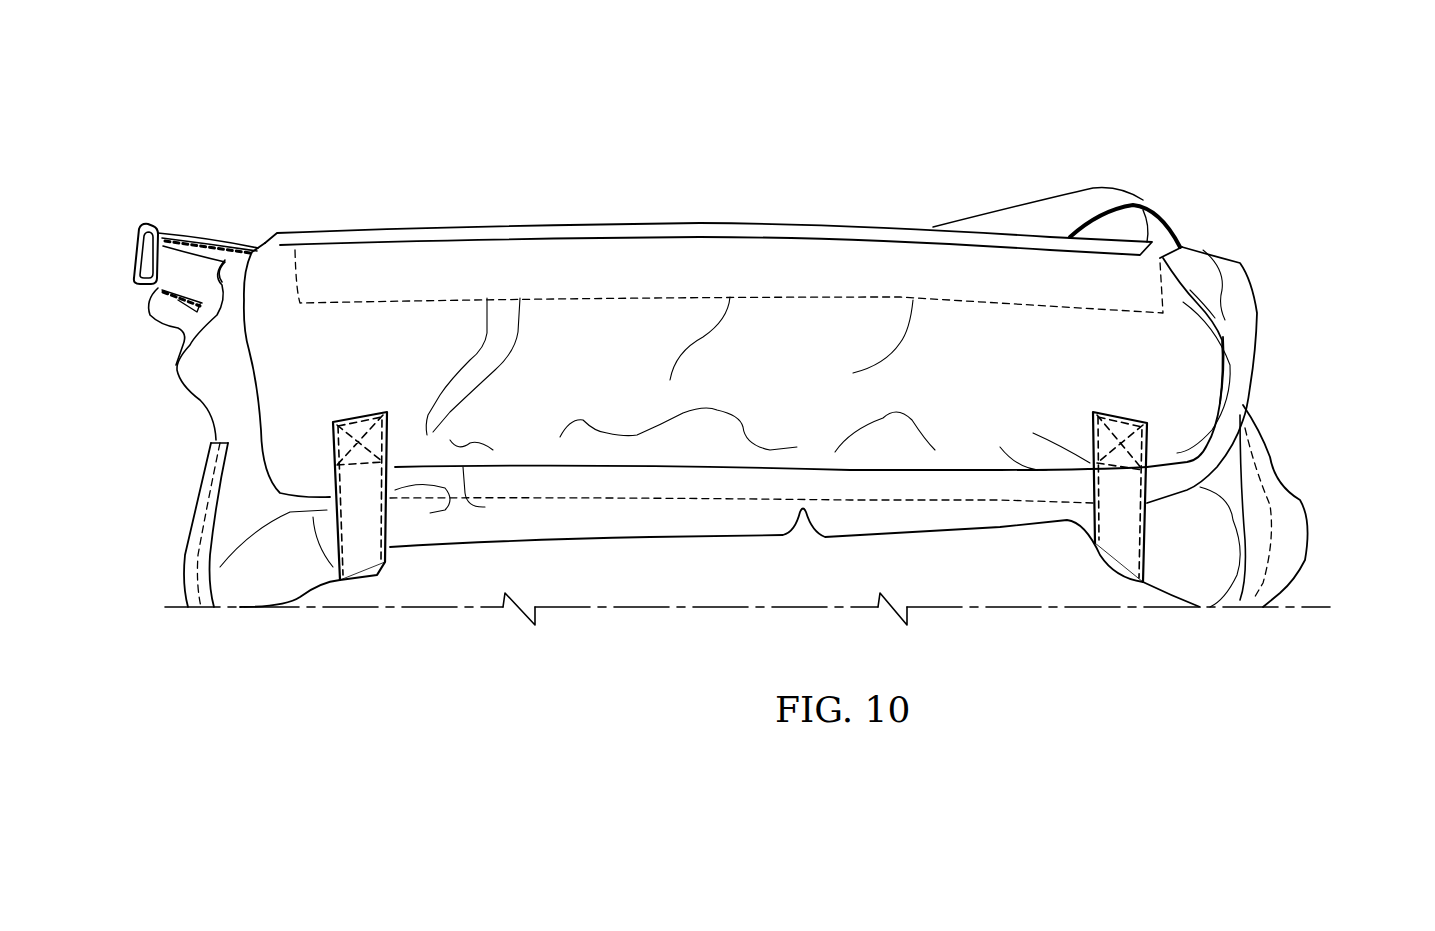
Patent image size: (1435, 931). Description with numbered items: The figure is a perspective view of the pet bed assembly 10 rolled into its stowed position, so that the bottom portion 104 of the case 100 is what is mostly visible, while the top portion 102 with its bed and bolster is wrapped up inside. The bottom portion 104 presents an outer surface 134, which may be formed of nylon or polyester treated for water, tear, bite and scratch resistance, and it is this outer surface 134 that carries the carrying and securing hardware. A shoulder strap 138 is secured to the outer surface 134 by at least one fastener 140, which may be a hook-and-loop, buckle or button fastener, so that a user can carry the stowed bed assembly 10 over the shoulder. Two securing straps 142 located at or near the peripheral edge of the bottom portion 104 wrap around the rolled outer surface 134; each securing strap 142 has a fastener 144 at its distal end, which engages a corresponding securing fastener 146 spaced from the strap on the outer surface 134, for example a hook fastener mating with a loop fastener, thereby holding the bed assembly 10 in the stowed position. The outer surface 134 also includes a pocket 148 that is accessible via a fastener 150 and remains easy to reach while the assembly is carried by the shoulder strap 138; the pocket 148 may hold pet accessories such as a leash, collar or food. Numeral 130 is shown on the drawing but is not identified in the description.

The bed assembly 10 is at (1346, 129).
The case 100 is at (1262, 317).
The top portion 102 is at (1290, 530).
The bottom portion 104 is at (1208, 293).
The hem 130 is at (1245, 470).
The outer surface 134 is at (1230, 352).
The shoulder strap 138 is at (1133, 197).
The fastener 140 is at (142, 199).
The securing strap 142 is at (1110, 543).
The fastener 144 is at (362, 430).
The securing fastener 146 is at (1113, 410).
The pocket 148 is at (1168, 249).
The fastener 150 is at (820, 230).